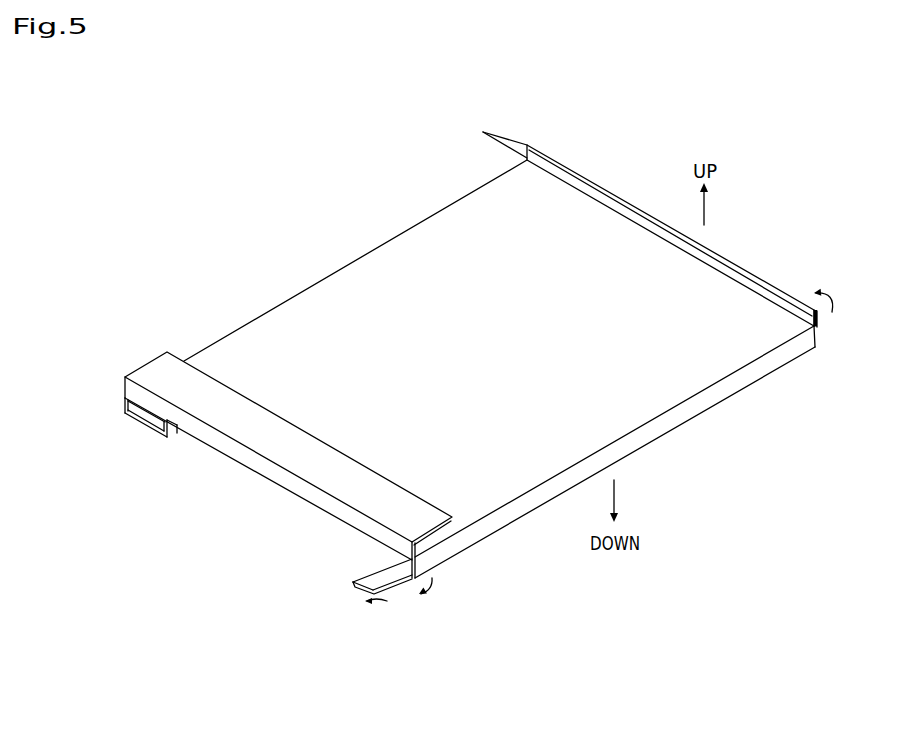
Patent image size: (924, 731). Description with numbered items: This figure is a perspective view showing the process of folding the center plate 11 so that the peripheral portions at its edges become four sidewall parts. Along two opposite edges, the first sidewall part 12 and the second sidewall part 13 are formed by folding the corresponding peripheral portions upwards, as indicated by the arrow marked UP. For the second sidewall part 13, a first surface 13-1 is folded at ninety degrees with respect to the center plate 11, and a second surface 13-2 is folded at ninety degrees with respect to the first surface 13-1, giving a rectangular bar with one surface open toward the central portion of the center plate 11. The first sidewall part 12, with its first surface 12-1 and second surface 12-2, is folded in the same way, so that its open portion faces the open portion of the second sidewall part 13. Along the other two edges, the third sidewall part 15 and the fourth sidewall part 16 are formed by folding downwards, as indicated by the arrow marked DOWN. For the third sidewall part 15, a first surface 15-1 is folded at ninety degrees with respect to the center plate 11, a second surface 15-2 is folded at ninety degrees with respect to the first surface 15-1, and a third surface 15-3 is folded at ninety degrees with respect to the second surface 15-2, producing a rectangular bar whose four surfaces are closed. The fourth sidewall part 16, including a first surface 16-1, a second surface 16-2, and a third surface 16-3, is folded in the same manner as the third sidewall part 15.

The center plate 11 is at (345, 290).
The first sidewall part 12 is at (242, 430).
The first surface 12-1 is at (125, 390).
The second surface 12-2 is at (155, 365).
The second sidewall part 13 is at (690, 214).
The first surface 13-1 is at (818, 320).
The second surface 13-2 is at (783, 290).
The third sidewall part 15 is at (531, 514).
The first surface 15-1 is at (438, 560).
The second surface 15-2 is at (400, 588).
The third surface 15-3 is at (357, 588).
The fourth sidewall part 16 is at (114, 458).
The first surface 16-1 is at (125, 407).
The second surface 16-2 is at (138, 427).
The third surface 16-3 is at (175, 438).